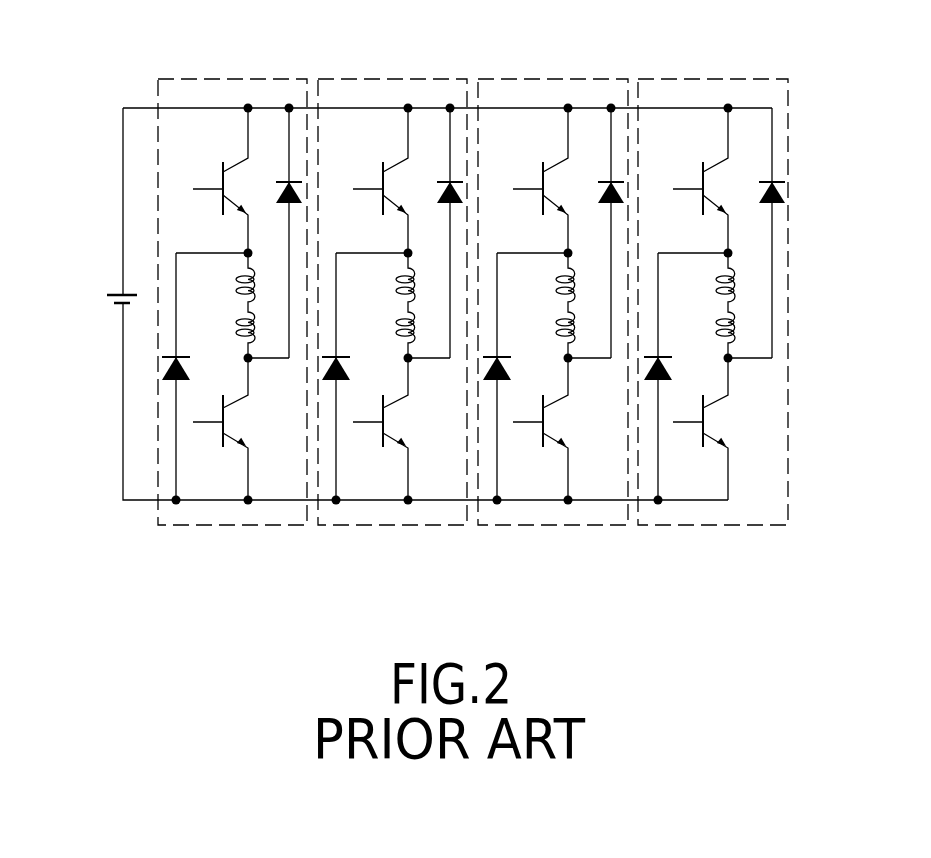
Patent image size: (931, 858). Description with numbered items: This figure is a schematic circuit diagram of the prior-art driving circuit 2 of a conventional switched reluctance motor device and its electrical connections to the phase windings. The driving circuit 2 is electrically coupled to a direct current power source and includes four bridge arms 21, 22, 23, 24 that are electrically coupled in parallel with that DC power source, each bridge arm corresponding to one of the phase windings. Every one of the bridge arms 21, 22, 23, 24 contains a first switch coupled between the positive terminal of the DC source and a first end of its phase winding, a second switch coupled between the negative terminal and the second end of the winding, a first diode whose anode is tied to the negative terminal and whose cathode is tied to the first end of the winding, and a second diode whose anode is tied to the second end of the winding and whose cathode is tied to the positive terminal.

The driving circuit 2 is at (135, 58).
The bridge arm 21 is at (245, 79).
The bridge arm 22 is at (405, 79).
The bridge arm 23 is at (565, 79).
The bridge arm 24 is at (725, 79).